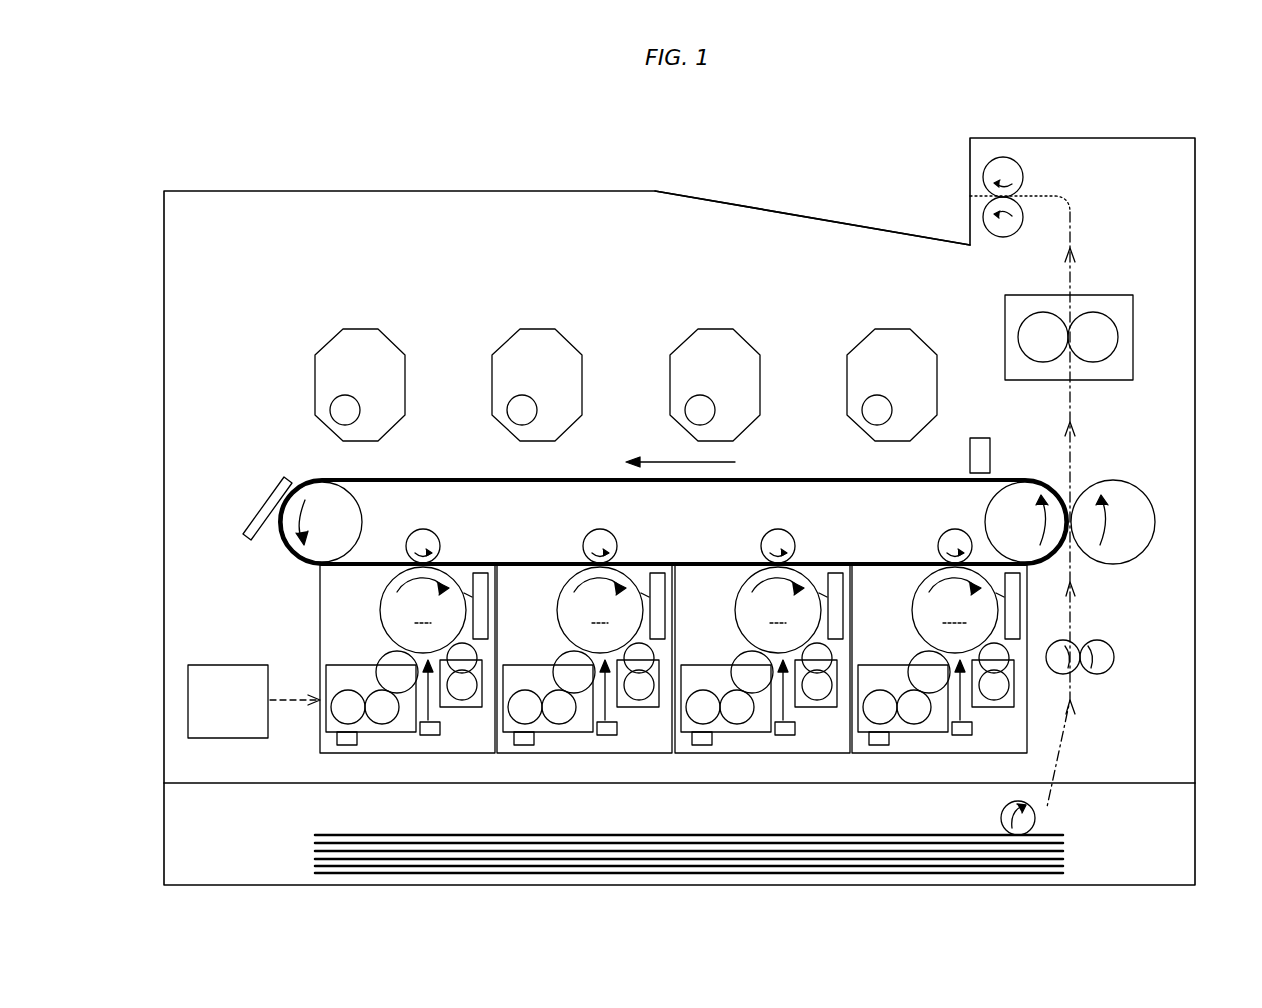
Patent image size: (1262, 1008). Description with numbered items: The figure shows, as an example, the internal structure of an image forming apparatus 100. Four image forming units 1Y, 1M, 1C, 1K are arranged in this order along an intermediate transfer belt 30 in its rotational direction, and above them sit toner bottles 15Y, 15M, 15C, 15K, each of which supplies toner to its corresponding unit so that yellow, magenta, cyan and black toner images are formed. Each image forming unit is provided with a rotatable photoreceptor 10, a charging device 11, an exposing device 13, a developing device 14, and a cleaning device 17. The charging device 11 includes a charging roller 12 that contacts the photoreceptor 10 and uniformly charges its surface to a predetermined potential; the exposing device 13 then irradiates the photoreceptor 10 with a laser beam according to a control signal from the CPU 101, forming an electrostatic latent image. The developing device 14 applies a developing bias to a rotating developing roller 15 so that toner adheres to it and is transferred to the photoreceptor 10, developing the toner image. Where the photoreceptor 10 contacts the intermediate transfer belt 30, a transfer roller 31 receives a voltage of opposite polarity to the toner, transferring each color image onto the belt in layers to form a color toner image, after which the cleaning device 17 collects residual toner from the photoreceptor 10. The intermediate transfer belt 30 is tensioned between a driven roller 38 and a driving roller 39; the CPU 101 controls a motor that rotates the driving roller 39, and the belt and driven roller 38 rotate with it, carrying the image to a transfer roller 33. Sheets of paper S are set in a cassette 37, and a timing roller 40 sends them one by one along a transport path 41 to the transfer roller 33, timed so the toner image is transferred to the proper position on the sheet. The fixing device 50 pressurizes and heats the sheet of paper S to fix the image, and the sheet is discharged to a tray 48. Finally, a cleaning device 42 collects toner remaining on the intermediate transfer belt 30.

The image forming apparatus 100 is at (1102, 106).
The tray 48 is at (788, 217).
The fixing device 50 is at (1105, 293).
The toner bottle 15Y is at (357, 327).
The toner bottle 15M is at (534, 327).
The toner bottle 15C is at (712, 327).
The toner bottle 15K is at (889, 327).
The intermediate transfer belt 30 is at (436, 477).
The driven roller 38 is at (318, 490).
The driving roller 39 is at (1020, 490).
The transfer roller 33 is at (1112, 490).
The cleaning device 42 is at (262, 511).
The transport path 41 is at (1075, 618).
The timing roller 40 is at (1116, 658).
The CPU 101 is at (226, 663).
The image forming unit 1Y is at (357, 759).
The image forming unit 1M is at (545, 759).
The image forming unit 1C is at (723, 759).
The image forming unit 1K is at (901, 759).
The photoreceptor 10 is at (392, 600).
The cleaning device 17 is at (480, 571).
The transfer roller 31 is at (423, 530).
The developing device 14 is at (333, 663).
The developing roller 15 is at (386, 661).
The charging device 11 is at (467, 702).
The charging roller 12 is at (478, 666).
The exposing device 13 is at (430, 737).
The sheet of paper S is at (313, 849).
The cassette 37 is at (1180, 845).